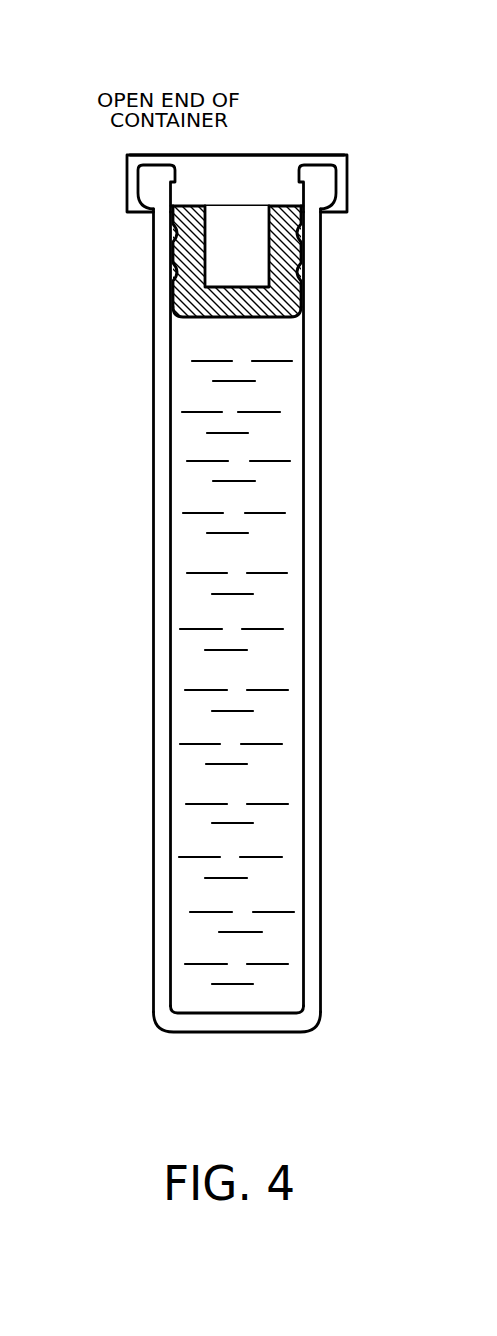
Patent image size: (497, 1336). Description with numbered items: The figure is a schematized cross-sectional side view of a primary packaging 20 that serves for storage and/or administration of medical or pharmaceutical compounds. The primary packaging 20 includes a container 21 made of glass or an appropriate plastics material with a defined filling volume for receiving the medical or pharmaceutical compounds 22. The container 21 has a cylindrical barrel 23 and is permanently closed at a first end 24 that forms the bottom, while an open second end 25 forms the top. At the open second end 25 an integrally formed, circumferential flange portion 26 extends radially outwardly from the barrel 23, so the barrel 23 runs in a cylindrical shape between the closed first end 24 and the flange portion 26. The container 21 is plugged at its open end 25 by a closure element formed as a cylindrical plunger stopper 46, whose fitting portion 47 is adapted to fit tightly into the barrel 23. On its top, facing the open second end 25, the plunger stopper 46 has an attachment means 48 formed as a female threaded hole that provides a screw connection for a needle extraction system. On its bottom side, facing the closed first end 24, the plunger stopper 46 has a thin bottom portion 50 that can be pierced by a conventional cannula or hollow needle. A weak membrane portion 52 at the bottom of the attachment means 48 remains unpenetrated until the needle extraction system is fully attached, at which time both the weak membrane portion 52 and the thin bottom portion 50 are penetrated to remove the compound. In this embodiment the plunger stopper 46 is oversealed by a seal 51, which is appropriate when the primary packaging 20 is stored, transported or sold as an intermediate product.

The primary packaging 20 is at (79, 134).
The container 21 is at (119, 376).
The medical or pharmaceutical compounds 22 is at (273, 513).
The cylindrical barrel 23 is at (321, 452).
The first end 24 is at (217, 1033).
The open second end 25 is at (208, 160).
The flange portion 26 is at (327, 187).
The plunger stopper 46 is at (178, 267).
The fitting portion 47 is at (300, 262).
The attachment means 48 is at (264, 220).
The thin bottom portion 50 is at (249, 318).
The seal 51 is at (337, 155).
The weak membrane portion 52 is at (229, 282).